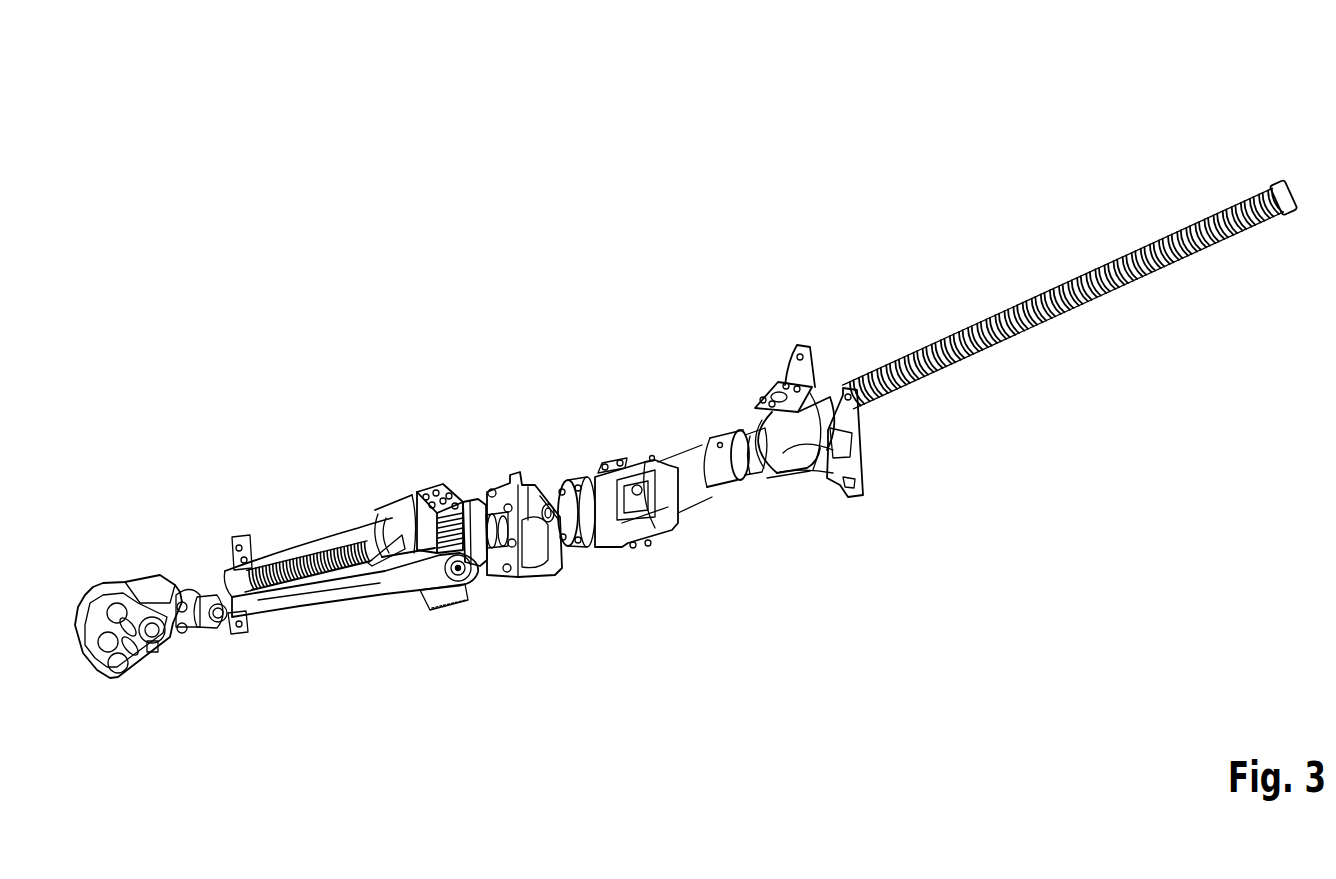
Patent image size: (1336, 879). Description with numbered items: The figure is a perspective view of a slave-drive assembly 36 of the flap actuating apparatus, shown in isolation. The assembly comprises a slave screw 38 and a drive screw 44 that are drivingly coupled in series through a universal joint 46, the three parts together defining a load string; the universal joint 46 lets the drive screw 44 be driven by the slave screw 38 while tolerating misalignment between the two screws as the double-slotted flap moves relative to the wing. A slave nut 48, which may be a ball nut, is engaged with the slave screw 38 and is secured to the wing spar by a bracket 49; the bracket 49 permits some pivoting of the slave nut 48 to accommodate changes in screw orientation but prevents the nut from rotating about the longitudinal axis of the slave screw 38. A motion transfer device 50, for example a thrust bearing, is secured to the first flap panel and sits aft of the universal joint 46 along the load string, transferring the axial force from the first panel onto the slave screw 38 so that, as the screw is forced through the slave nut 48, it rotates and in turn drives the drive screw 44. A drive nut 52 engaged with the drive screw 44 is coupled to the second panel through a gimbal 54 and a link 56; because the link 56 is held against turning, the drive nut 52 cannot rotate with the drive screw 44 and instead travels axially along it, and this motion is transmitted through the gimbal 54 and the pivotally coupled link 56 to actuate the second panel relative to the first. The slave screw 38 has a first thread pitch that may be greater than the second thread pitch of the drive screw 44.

The slave-drive assembly 36 is at (800, 110).
The slave screw 38 is at (1103, 268).
The drive screw 44 is at (269, 576).
The universal joint 46 is at (640, 486).
The slave nut 48 is at (759, 457).
The bracket 49 is at (820, 462).
The motion transfer device 50 is at (523, 484).
The drive nut 52 is at (413, 528).
The gimbal 54 is at (384, 583).
The link 56 is at (147, 587).